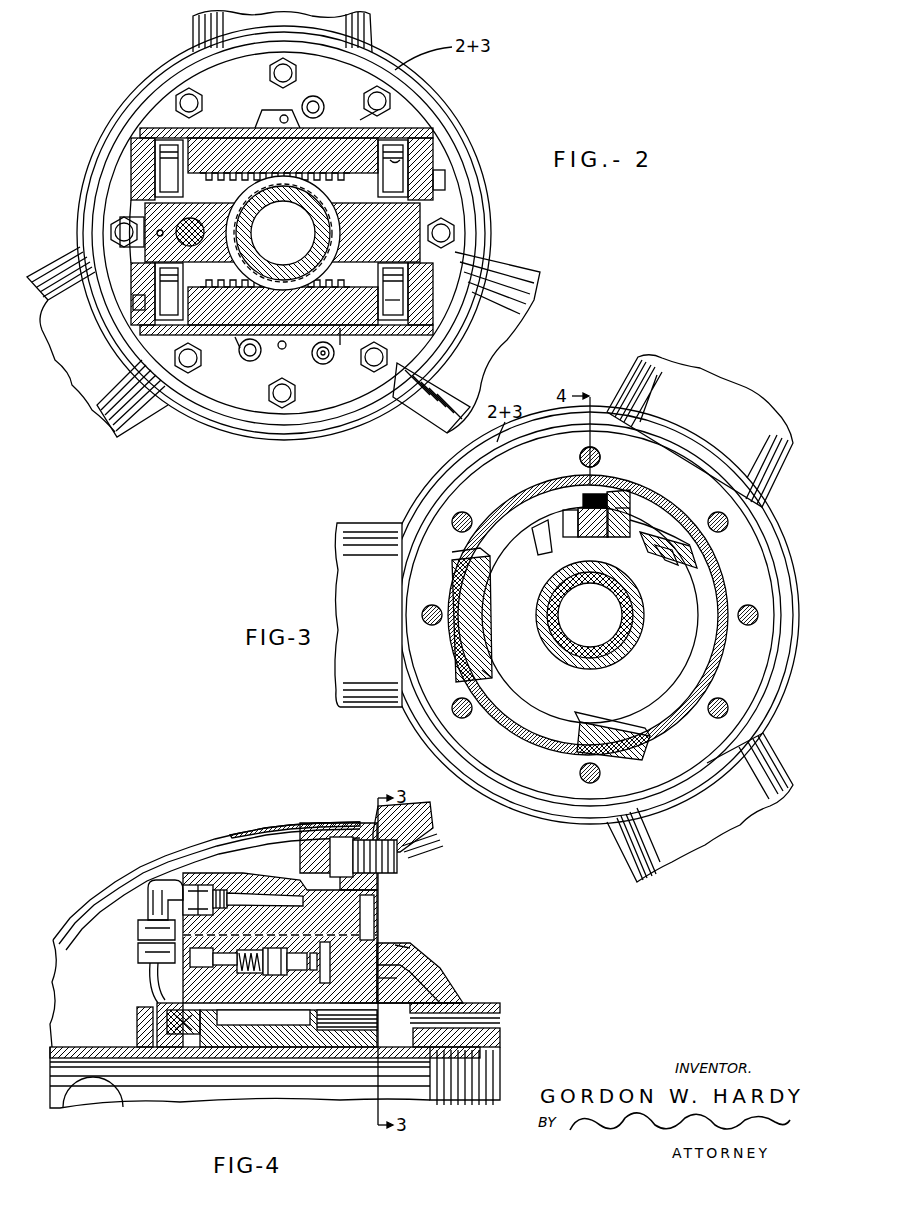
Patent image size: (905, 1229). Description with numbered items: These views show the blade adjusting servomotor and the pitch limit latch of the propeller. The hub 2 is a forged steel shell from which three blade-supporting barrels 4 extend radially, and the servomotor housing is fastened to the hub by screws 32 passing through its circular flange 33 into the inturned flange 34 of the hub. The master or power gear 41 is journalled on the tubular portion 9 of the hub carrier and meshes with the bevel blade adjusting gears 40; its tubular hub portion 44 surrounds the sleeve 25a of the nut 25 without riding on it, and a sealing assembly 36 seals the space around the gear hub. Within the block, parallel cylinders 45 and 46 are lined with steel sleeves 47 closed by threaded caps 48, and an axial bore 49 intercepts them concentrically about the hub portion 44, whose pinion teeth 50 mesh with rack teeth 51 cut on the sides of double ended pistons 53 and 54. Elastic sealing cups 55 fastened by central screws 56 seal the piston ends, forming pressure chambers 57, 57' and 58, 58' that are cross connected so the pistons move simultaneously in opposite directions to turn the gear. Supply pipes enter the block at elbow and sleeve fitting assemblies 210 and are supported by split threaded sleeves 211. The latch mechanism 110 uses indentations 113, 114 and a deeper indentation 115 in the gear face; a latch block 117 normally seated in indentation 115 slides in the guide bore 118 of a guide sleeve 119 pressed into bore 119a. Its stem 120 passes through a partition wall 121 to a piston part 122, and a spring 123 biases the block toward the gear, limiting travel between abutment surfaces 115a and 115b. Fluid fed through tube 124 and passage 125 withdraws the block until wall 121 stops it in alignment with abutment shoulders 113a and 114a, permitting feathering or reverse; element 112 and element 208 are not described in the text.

In FIG. 4, the hub 2 is at (432, 818).
In FIG. 2, the blade-supporting barrels 4 is at (372, 29).
In FIG. 3, the blade-supporting barrels 4 is at (708, 442).
In FIG. 4, the tubular portion of the hub carrier 9 is at (510, 1010).
In FIG. 4, the nut 25 is at (502, 1036).
In FIG. 4, the sleeve 25a is at (88, 1047).
In FIG. 2, the screws 32 is at (186, 101).
In FIG. 3, the screws 32 is at (728, 521).
In FIG. 2, the circular flange 33 is at (290, 375).
In FIG. 3, the inturned flange 34 is at (560, 786).
In FIG. 4, the sealing assembly 36 is at (145, 1058).
In FIG. 3, the blade adjusting gears 40 is at (698, 560).
In FIG. 3, the master or power gear 41 is at (682, 633).
In FIG. 4, the master or power gear 41 is at (450, 1000).
In FIG. 2, the hub portion 44 is at (240, 228).
In FIG. 3, the hub portion 44 is at (545, 623).
In FIG. 2, the cylinder 45 is at (395, 165).
In FIG. 2, the cylinder 46 is at (398, 302).
In FIG. 2, the steel sleeves 47 is at (372, 118).
In FIG. 2, the threaded plugs or caps 48 is at (135, 150).
In FIG. 2, the axial bore 49 is at (420, 215).
In FIG. 2, the pinion or gear teeth 50 is at (330, 258).
In FIG. 4, the pinion or gear teeth 50 is at (268, 1047).
In FIG. 2, the rack teeth 51 is at (226, 342).
In FIG. 2, the double ended piston 53 is at (277, 107).
In FIG. 2, the double ended piston 54 is at (345, 300).
In FIG. 2, the elastic sealing cups 55 is at (400, 160).
In FIG. 2, the central screws 56 is at (443, 163).
In FIG. 2, the pressure chamber 57 is at (169, 168).
In FIG. 2, the pressure chamber 57' is at (393, 168).
In FIG. 2, the pressure chamber 58 is at (169, 291).
In FIG. 2, the pressure chamber 58' is at (393, 291).
In FIG. 2, the latch mechanism 110 is at (185, 238).
In FIG. 3, the latch mechanism 110 is at (598, 493).
In FIG. 4, the latch mechanism 110 is at (130, 960).
In FIG. 3, the pin 112 is at (574, 460).
In FIG. 3, the indentation 113 is at (565, 515).
In FIG. 4, the indentation 113 is at (412, 938).
In FIG. 3, the abutment shoulder 113a is at (532, 533).
In FIG. 3, the indentation 114 is at (640, 530).
In FIG. 3, the abutment shoulder 114a is at (658, 555).
In FIG. 3, the indentation 115 is at (622, 505).
In FIG. 4, the indentation 115 is at (400, 968).
In FIG. 3, the abutment surface 115a is at (581, 528).
In FIG. 3, the abutment surface 115b is at (613, 535).
In FIG. 4, the latch block 117 is at (398, 983).
In FIG. 4, the guide bore 118 is at (380, 948).
In FIG. 4, the guide sleeve 119 is at (372, 925).
In FIG. 4, the bore 119a is at (262, 945).
In FIG. 4, the stem 120 is at (285, 1010).
In FIG. 4, the partition wall 121 is at (290, 980).
In FIG. 4, the piston part 122 is at (230, 1010).
In FIG. 4, the spring 123 is at (200, 1058).
In FIG. 2, the tube 124 is at (342, 347).
In FIG. 4, the tube 124 is at (150, 990).
In FIG. 4, the passage 125 is at (255, 890).
In FIG. 4, the rim 208 is at (205, 934).
In FIG. 2, the elbow and sleeve fitting assemblies 210 is at (316, 112).
In FIG. 2, the split threaded sleeves 211 is at (325, 93).